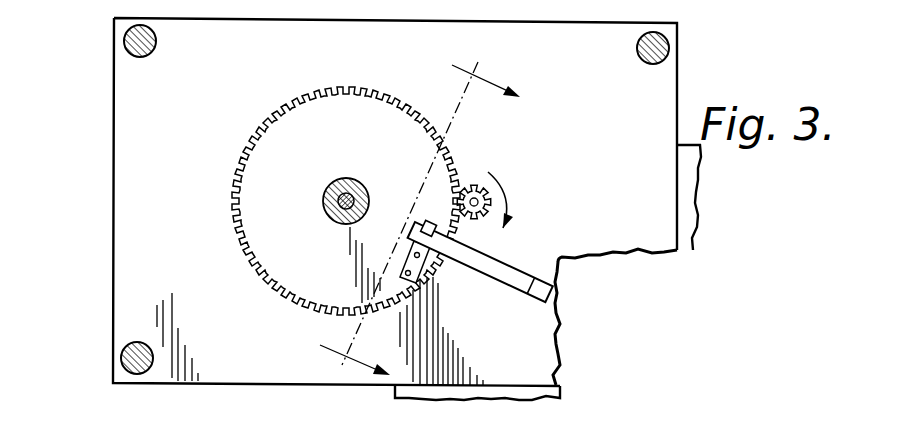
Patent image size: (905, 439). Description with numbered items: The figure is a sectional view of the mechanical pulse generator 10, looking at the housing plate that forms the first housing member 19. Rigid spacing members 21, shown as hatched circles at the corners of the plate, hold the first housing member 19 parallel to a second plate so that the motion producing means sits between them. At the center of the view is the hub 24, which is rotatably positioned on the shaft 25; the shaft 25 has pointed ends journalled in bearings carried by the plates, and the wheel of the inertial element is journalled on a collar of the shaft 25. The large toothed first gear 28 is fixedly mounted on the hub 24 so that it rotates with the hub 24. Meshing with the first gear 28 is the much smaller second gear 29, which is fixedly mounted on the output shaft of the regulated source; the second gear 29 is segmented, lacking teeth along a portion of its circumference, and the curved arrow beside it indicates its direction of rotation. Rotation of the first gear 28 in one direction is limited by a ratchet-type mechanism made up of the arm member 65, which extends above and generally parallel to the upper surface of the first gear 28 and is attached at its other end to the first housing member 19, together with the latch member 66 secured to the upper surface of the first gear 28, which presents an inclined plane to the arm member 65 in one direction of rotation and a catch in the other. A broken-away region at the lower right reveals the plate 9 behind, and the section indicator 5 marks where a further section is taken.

The section line 5- 5 is at (418, 214).
The support plate 9 is at (688, 190).
The pulse generator 10 is at (92, 262).
The first housing member 19 is at (130, 150).
The rigid spacing members 21 is at (125, 41).
The hub 24 is at (326, 188).
The shaft 25 is at (346, 190).
The first gear 28 is at (406, 68).
The second gear 29 is at (476, 186).
The arm member 65 is at (515, 270).
The latch member 66 is at (424, 220).